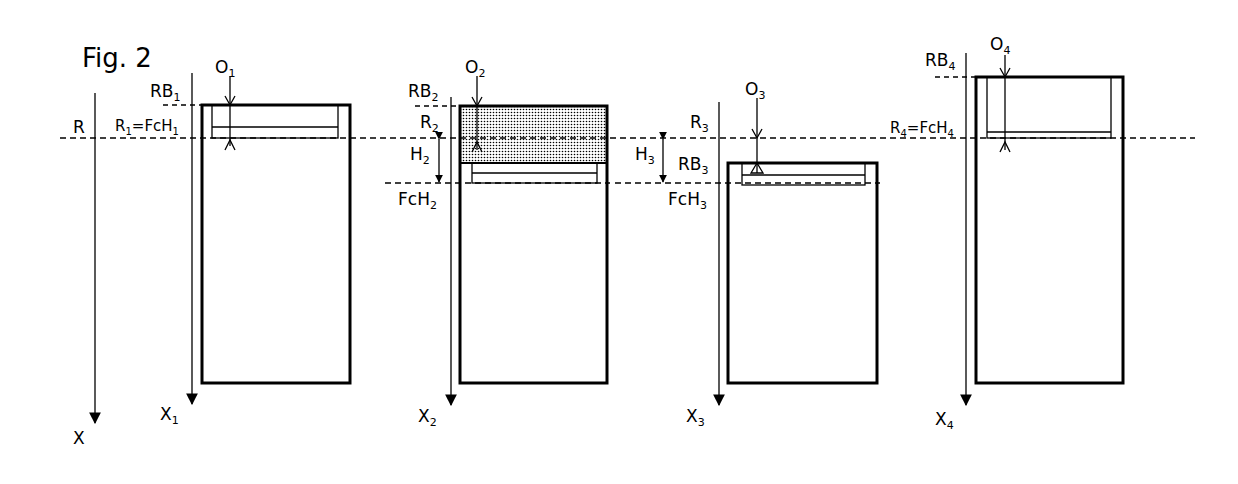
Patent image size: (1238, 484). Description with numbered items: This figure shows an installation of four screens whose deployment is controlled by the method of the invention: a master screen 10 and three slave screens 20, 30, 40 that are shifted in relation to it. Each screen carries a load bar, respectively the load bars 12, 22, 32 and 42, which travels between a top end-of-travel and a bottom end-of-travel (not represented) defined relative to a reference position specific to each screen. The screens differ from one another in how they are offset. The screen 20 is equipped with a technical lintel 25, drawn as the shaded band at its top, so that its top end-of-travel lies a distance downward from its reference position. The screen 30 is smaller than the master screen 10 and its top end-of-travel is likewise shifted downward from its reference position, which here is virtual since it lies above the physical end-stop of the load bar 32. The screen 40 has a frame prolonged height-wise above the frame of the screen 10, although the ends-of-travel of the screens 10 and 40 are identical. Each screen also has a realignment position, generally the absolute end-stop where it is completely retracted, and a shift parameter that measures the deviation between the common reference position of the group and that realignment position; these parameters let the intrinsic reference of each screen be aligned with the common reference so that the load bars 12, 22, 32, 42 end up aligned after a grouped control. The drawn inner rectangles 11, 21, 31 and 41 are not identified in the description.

The master screen 10 is at (295, 330).
The first substrate holder 11 is at (312, 118).
The load bar 12 is at (270, 130).
The slave screen 20 is at (559, 330).
The second substrate holder 21 is at (540, 168).
The load bar 22 is at (507, 168).
The technical lintel 25 is at (573, 145).
The slave screen 30 is at (819, 330).
The third substrate holder 31 is at (832, 168).
The load bar 32 is at (800, 178).
The slave screen 40 is at (1064, 332).
The fourth substrate holder 41 is at (1090, 118).
The load bar 42 is at (1050, 137).